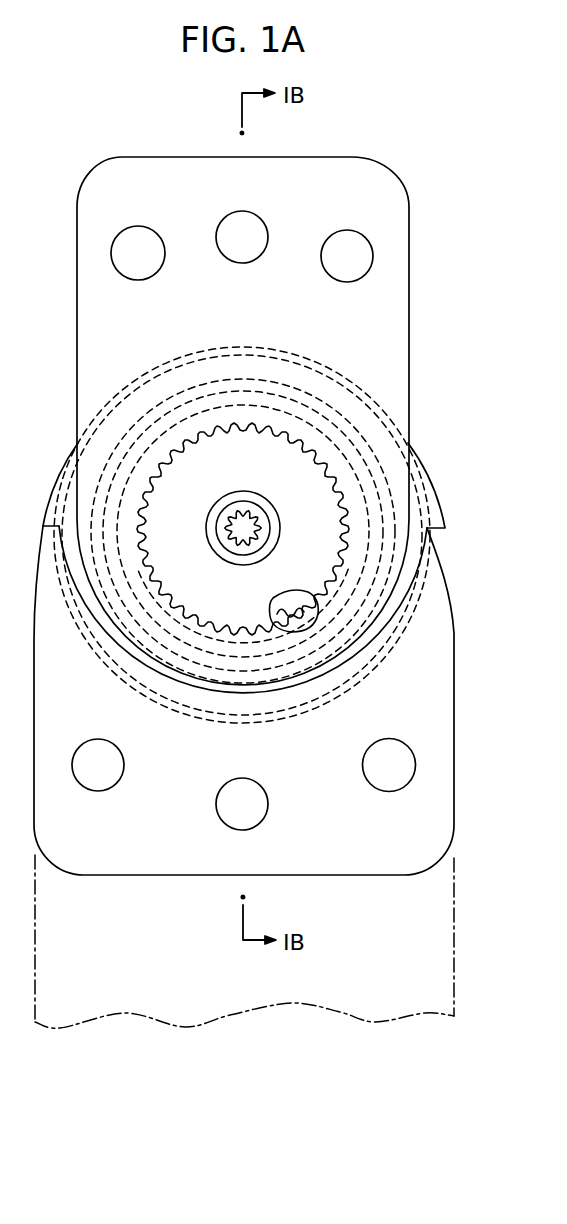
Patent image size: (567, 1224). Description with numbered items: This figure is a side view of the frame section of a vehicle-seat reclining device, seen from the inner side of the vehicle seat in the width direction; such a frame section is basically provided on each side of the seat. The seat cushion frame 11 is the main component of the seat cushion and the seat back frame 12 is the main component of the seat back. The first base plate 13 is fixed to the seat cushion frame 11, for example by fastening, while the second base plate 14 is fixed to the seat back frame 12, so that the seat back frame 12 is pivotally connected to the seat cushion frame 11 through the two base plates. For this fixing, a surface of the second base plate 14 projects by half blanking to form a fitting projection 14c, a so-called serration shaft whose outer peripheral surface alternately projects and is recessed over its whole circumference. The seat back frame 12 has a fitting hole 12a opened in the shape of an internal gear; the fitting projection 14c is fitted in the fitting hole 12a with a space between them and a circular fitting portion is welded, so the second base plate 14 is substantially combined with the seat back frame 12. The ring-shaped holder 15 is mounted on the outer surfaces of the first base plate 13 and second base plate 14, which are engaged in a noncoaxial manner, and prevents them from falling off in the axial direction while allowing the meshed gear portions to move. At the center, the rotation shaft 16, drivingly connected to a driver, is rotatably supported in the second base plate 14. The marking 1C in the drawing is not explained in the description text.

The seat cushion frame 11 is at (454, 950).
The seat back frame 12 is at (413, 306).
The fitting hole 12a is at (339, 517).
The first base plate 13 is at (443, 757).
The second base plate 14 is at (350, 415).
The fitting projection 14c is at (338, 563).
The holder 15 is at (431, 493).
The rotation shaft 16 is at (256, 496).
The detail view indicator 1C is at (318, 614).